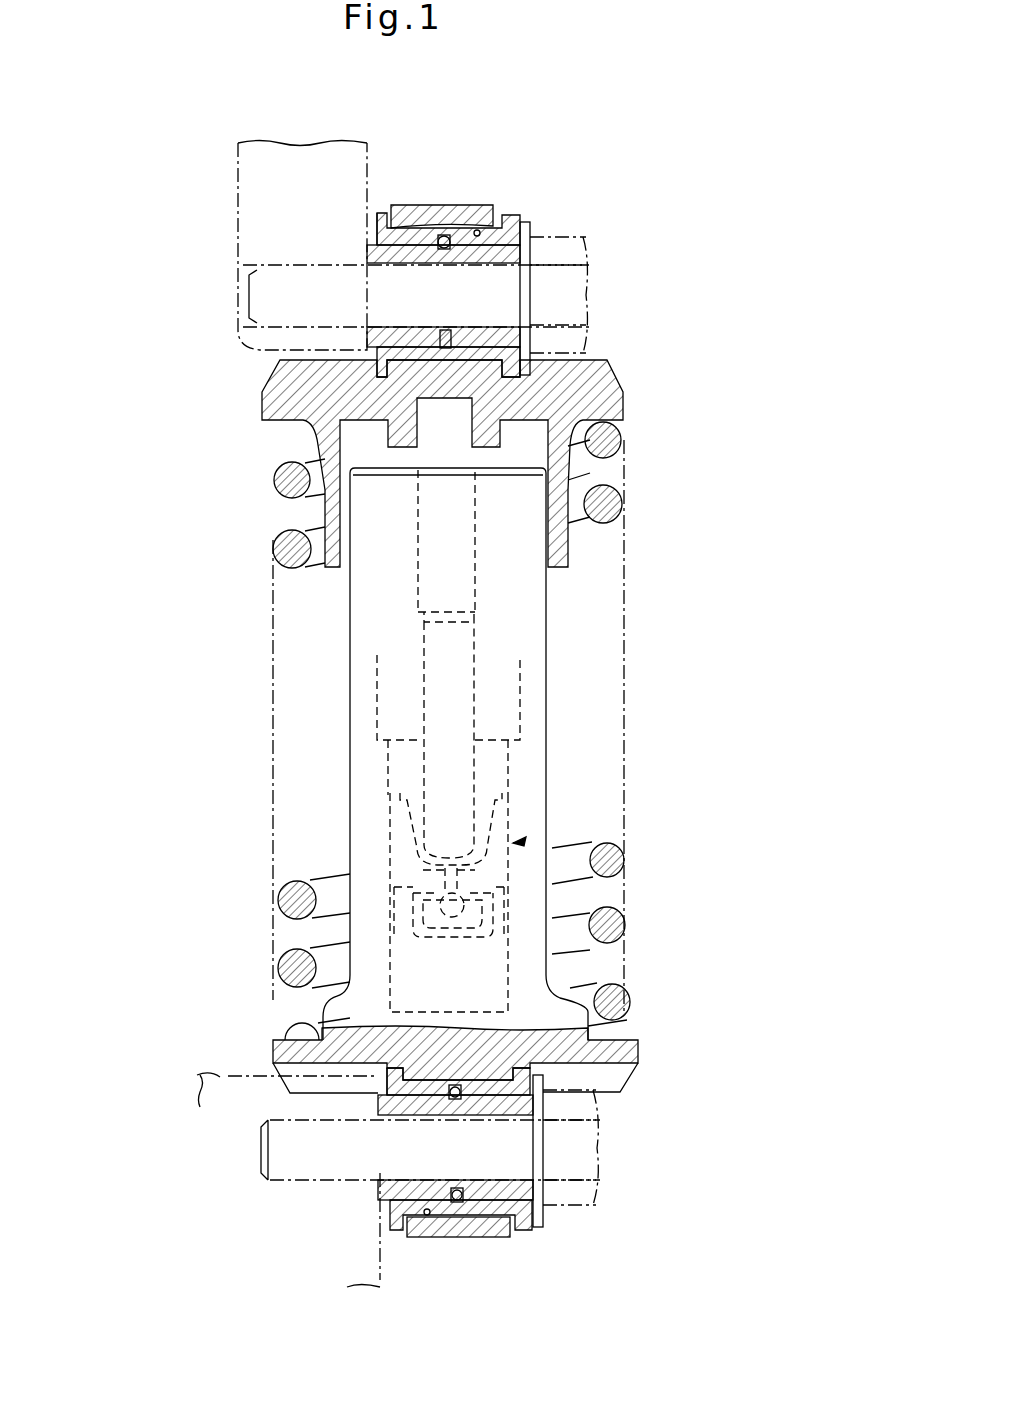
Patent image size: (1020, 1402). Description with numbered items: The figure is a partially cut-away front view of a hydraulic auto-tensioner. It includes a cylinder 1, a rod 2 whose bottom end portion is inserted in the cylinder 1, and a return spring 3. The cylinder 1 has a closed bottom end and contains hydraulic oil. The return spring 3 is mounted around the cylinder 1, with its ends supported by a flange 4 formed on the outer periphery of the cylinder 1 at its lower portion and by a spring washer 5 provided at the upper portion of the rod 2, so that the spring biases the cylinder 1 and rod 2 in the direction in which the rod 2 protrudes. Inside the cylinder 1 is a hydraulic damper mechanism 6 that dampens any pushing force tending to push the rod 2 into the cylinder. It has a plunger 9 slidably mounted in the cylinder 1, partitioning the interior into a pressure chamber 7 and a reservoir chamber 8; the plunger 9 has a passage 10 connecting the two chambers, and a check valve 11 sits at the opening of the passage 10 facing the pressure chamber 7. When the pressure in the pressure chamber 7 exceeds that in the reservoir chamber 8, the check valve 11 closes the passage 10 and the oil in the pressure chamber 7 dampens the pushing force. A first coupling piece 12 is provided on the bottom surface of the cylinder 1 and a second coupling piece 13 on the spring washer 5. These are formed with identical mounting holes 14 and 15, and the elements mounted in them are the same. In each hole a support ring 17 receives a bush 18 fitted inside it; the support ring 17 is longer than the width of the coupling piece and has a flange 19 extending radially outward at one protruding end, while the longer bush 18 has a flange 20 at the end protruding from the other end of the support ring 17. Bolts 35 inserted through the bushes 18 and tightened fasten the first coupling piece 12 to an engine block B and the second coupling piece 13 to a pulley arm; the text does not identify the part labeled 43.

The cylinder 1 is at (367, 612).
The rod 2 is at (430, 514).
The return spring 3 is at (285, 900).
The flange 4 is at (290, 1045).
The spring washer 5 is at (268, 407).
The hydraulic damper mechanism 6 is at (516, 842).
The pressure chamber 7 is at (505, 970).
The reservoir chamber 8 is at (520, 695).
The plunger 9 is at (505, 805).
The passage 10 is at (482, 853).
The check valve 11 is at (463, 907).
The first coupling piece 12 is at (468, 1238).
The second coupling piece 13 is at (448, 210).
The mounting hole 14 is at (428, 1216).
The mounting hole 15 is at (487, 208).
The support ring 17 is at (418, 236).
The bush 18 is at (367, 253).
The flange 19 is at (384, 214).
The flange 20 is at (516, 222).
The bolt 35 is at (580, 291).
The shaft 43 is at (250, 162).
The engine block B is at (217, 1078).